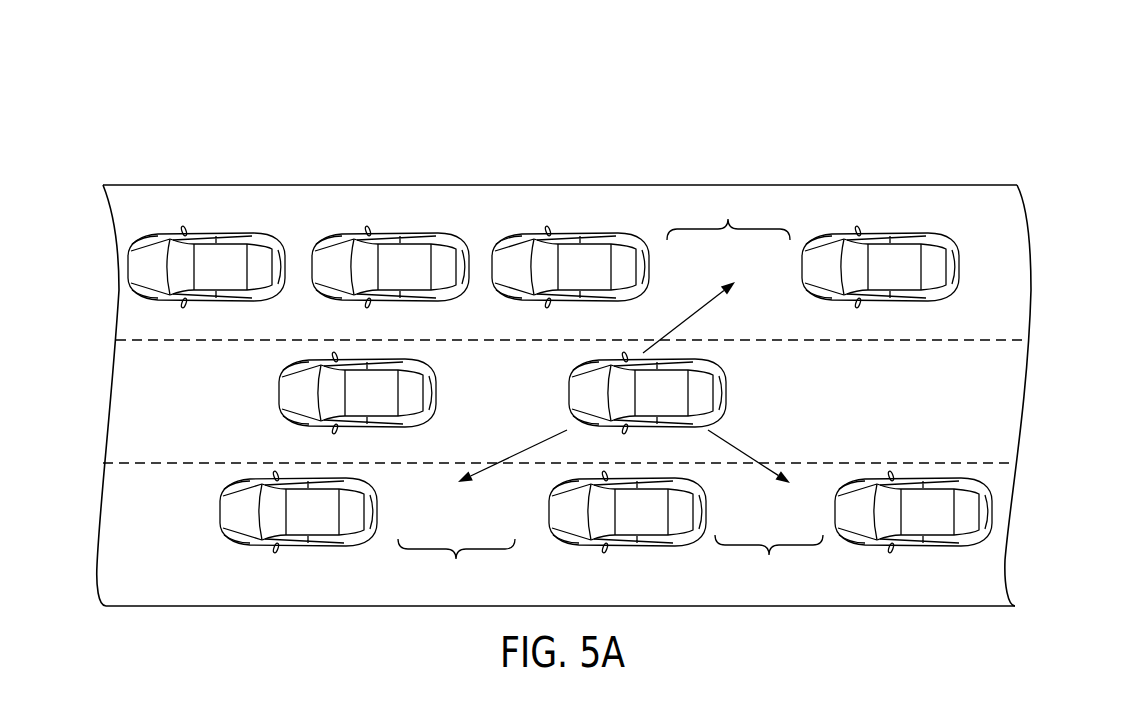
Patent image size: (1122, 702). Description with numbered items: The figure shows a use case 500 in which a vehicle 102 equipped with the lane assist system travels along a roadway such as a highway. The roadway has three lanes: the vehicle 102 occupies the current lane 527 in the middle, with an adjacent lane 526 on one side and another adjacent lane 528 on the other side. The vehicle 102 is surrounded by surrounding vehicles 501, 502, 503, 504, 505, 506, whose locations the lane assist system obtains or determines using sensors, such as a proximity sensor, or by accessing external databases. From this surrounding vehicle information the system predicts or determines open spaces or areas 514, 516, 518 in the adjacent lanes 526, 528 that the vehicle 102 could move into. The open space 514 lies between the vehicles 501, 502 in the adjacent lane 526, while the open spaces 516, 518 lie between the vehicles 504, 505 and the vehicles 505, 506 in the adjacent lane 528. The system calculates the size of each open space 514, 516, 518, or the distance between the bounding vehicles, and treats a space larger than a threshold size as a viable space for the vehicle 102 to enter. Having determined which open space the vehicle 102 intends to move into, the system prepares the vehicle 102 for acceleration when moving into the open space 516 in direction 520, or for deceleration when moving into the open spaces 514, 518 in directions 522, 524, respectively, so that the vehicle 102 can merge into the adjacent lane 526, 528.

The driving scenario / roadway 500 is at (147, 114).
The vehicle 102 is at (729, 376).
The surrounding vehicle 501 is at (593, 231).
The surrounding vehicle 502 is at (955, 237).
The surrounding vehicle 503 is at (435, 418).
The surrounding vehicle 504 is at (380, 527).
The surrounding vehicle 505 is at (670, 547).
The surrounding vehicle 506 is at (963, 548).
The open space or area 514 is at (728, 214).
The open space or area 516 is at (456, 567).
The open space or area 518 is at (769, 565).
The direction 520 is at (530, 448).
The direction 522 is at (677, 326).
The direction 524 is at (745, 452).
The adjacent lane 526 is at (1015, 248).
The current lane 527 is at (1012, 403).
The adjacent lane 528 is at (983, 561).